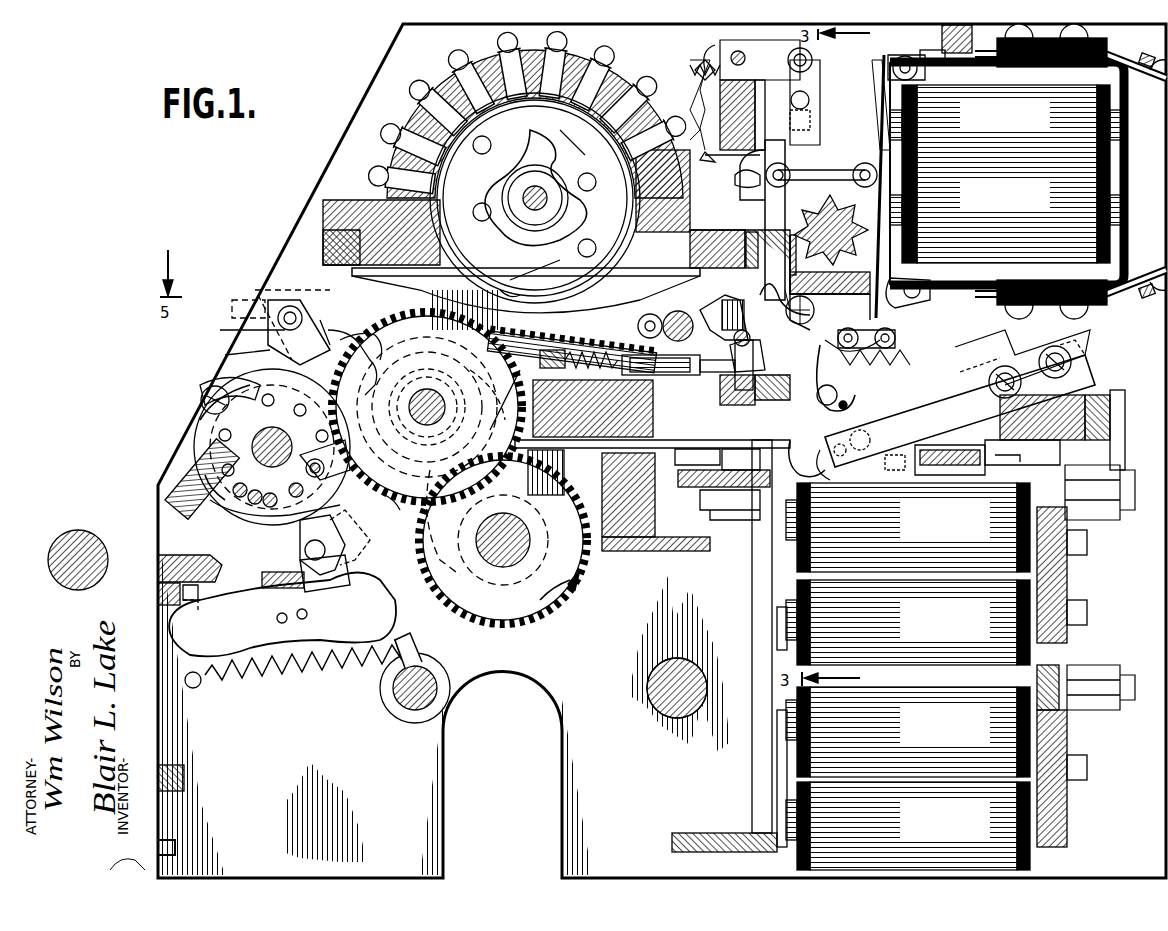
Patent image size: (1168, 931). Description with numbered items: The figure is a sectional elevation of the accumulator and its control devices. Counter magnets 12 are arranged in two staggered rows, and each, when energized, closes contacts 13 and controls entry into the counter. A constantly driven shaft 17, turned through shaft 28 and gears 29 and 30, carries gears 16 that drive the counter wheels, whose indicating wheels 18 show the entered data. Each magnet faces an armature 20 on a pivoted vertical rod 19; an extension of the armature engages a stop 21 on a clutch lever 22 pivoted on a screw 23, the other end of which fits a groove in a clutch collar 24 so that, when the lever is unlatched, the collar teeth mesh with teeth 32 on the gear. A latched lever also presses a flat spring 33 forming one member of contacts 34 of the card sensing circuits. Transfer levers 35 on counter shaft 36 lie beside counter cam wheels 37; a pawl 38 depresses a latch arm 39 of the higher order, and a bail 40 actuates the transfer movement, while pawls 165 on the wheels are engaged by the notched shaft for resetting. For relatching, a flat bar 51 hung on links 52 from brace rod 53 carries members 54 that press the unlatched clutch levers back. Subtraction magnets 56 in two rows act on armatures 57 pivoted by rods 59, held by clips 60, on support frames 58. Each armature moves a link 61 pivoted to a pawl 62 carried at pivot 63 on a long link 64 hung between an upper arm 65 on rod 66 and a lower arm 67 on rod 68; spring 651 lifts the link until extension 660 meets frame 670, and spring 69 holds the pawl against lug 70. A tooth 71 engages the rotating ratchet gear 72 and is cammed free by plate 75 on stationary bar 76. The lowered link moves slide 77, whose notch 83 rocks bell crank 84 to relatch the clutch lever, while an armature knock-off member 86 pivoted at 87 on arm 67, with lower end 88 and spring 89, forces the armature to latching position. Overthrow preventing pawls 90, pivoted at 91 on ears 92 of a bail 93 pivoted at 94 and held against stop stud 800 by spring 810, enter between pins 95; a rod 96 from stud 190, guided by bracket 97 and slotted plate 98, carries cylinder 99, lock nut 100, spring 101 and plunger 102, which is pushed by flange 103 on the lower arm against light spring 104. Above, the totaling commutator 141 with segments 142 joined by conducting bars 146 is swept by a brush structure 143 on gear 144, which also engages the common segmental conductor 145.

The counter magnet 12 is at (960, 676).
The contacts 13 is at (880, 470).
The gear 16 is at (394, 510).
The shaft 17 is at (410, 412).
The indicating wheel 18 is at (200, 430).
The vertical rod 19 is at (752, 774).
The armature 20 is at (750, 592).
The stop 21 is at (700, 462).
The clutch lever 22 is at (720, 445).
The screw 23 is at (619, 465).
The clutch collar 24 is at (427, 407).
The shaft 28 is at (505, 570).
The gear 29 is at (470, 600).
The gear 30 is at (426, 523).
The teeth 32 is at (427, 407).
The flat spring 33 is at (965, 380).
The contacts 34 is at (850, 465).
The lever 35 is at (306, 573).
The counter shaft 36 is at (250, 450).
The counter cam wheel 37 is at (240, 520).
The pawl 38 is at (336, 542).
The latch arm 39 is at (380, 592).
The bail 40 is at (277, 621).
The flat bar 51 is at (959, 464).
The link 52 is at (1015, 450).
The brace rod 53 is at (1100, 430).
The member 54 is at (915, 462).
The subtraction magnet 56 is at (1006, 171).
The armature 57 is at (878, 68).
The magnet support frame 58 is at (1132, 125).
The pivot rod 59 is at (900, 58).
The removable clip 60 is at (935, 55).
The link 61 is at (825, 170).
The pawl 62 is at (752, 182).
The pivot 63 is at (775, 300).
The long link 64 is at (812, 140).
The upper arm 65 is at (808, 70).
The rod 66 is at (725, 58).
The lower arm 67 is at (755, 367).
The rod 68 is at (710, 310).
The spring 69 is at (690, 248).
The lug 70 is at (731, 171).
The tooth 71 is at (815, 215).
The ratchet gear 72 is at (832, 264).
The vertical plate 75 is at (820, 298).
The stationary bar 76 is at (869, 313).
The slide 77 is at (840, 394).
The notch 83 is at (855, 440).
The bell crank 84 is at (841, 433).
The armature knock-off member 86 is at (880, 364).
The pivot 87 is at (898, 336).
The lower end 88 is at (812, 480).
The spring 89 is at (895, 352).
The overthrow preventing pawl 90 is at (348, 348).
The pivot 91 is at (292, 302).
The ear 92 is at (270, 285).
The bail 93 is at (230, 303).
The pivot 94 is at (208, 390).
The pin 95 is at (200, 390).
The rod 96 is at (486, 395).
The bracket 97 is at (580, 356).
The slotted plate 98 is at (496, 404).
The cylinder 99 is at (679, 334).
The lock nut 100 is at (661, 355).
The spring 101 is at (680, 373).
The plunger 102 is at (725, 379).
The flange 103 is at (653, 319).
The light spring 104 is at (640, 395).
The commutator 141 is at (445, 100).
The segment 142 is at (425, 112).
The brush structure 143 is at (575, 215).
The gear 144 is at (526, 233).
The common segmental conductor 145 is at (460, 240).
The common conducting bar 146 is at (515, 60).
The pawl 165 is at (300, 480).
The stud 190 is at (360, 339).
The spring 651 is at (698, 70).
The extension 660 is at (721, 153).
The frame 670 is at (705, 84).
The stop stud 800 is at (234, 336).
The spring 810 is at (410, 407).